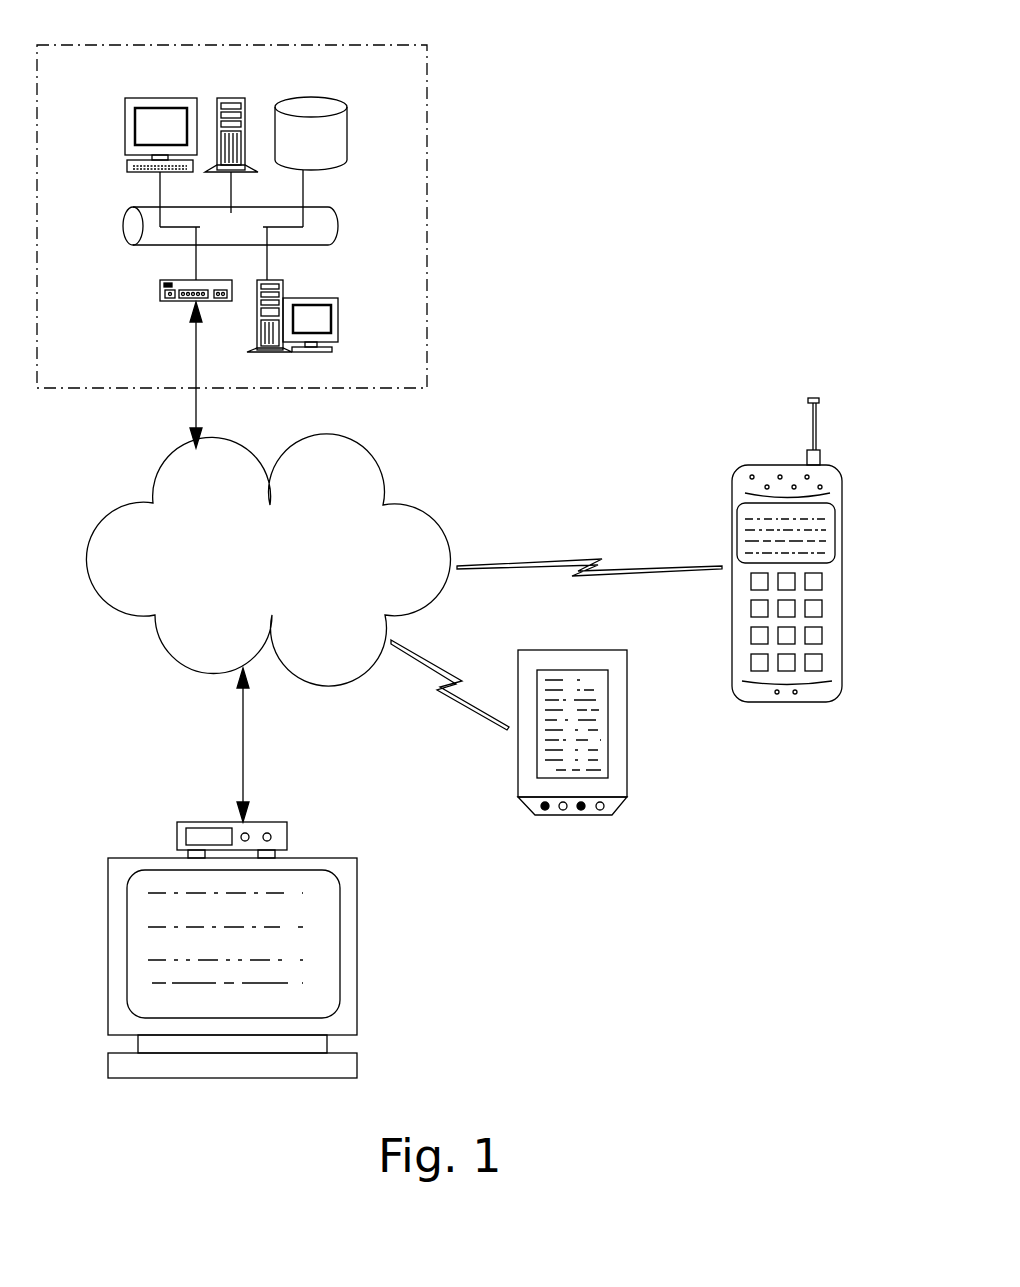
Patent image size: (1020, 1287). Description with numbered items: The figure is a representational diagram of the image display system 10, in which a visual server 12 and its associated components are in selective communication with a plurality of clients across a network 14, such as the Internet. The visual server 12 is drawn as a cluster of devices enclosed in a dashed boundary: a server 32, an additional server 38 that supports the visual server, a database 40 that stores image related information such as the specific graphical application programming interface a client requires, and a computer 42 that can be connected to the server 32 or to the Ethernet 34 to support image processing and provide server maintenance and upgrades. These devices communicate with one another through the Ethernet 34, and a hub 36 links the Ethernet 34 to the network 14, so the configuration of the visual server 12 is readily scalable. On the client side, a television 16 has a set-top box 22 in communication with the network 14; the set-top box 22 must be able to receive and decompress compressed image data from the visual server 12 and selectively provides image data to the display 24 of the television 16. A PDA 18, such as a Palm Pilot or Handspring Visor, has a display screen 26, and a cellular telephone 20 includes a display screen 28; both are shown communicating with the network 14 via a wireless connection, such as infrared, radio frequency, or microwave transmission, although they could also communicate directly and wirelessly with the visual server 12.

The image display system 10 is at (642, 90).
The visual server 12 is at (427, 207).
The network 14 is at (369, 463).
The television 16 is at (108, 937).
The PDA 18 is at (627, 690).
The cellular telephone 20 is at (842, 538).
The set-top box 22 is at (267, 822).
The display 24 is at (352, 945).
The display screen 26 is at (610, 736).
The display screen 28 is at (846, 522).
The server 32 is at (231, 98).
The Ethernet 34 is at (339, 225).
The hub 36 is at (160, 289).
The additional server 38 is at (338, 315).
The database 40 is at (347, 135).
The computer 42 is at (125, 133).